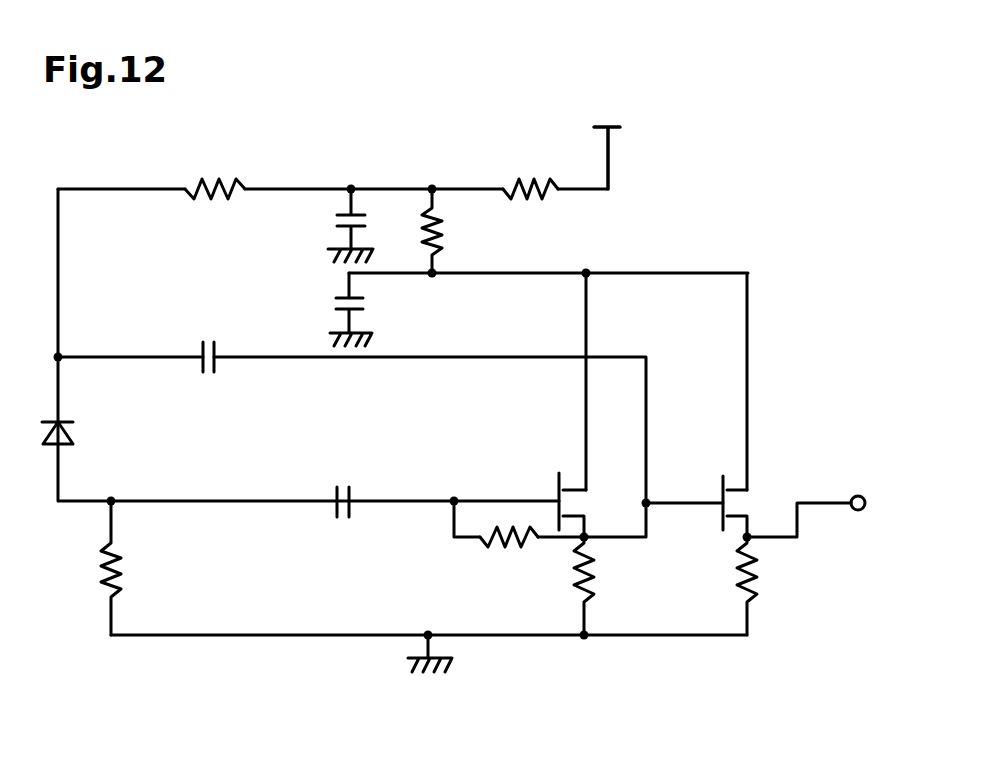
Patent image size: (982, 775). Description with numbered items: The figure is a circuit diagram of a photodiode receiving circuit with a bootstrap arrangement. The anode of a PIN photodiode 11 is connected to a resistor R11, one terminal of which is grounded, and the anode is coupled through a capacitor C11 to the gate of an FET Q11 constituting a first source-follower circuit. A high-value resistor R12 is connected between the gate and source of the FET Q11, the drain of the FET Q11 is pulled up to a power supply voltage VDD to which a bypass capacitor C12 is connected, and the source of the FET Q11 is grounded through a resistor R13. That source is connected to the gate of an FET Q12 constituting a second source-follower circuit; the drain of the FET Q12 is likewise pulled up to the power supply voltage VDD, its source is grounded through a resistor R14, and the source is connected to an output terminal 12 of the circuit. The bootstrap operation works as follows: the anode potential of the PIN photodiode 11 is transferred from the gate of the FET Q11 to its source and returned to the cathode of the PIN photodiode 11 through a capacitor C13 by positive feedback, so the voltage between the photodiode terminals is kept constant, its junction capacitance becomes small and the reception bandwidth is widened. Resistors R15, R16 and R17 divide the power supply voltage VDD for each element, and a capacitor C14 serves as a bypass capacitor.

The PIN photodiode 11 is at (70, 433).
The output terminal 12 is at (857, 496).
The resistor R11 is at (141, 568).
The resistor R12 is at (512, 557).
The resistor R13 is at (612, 586).
The resistor R14 is at (775, 586).
The resistor R15 is at (458, 231).
The resistor R16 is at (530, 177).
The resistor R17 is at (215, 175).
The capacitor C11 is at (354, 487).
The bypass capacitor C12 is at (377, 309).
The capacitor C13 is at (218, 341).
The bypass capacitor C14 is at (327, 225).
The FET Q11 is at (599, 505).
The FET Q12 is at (787, 506).
The power supply voltage VDD is at (614, 139).